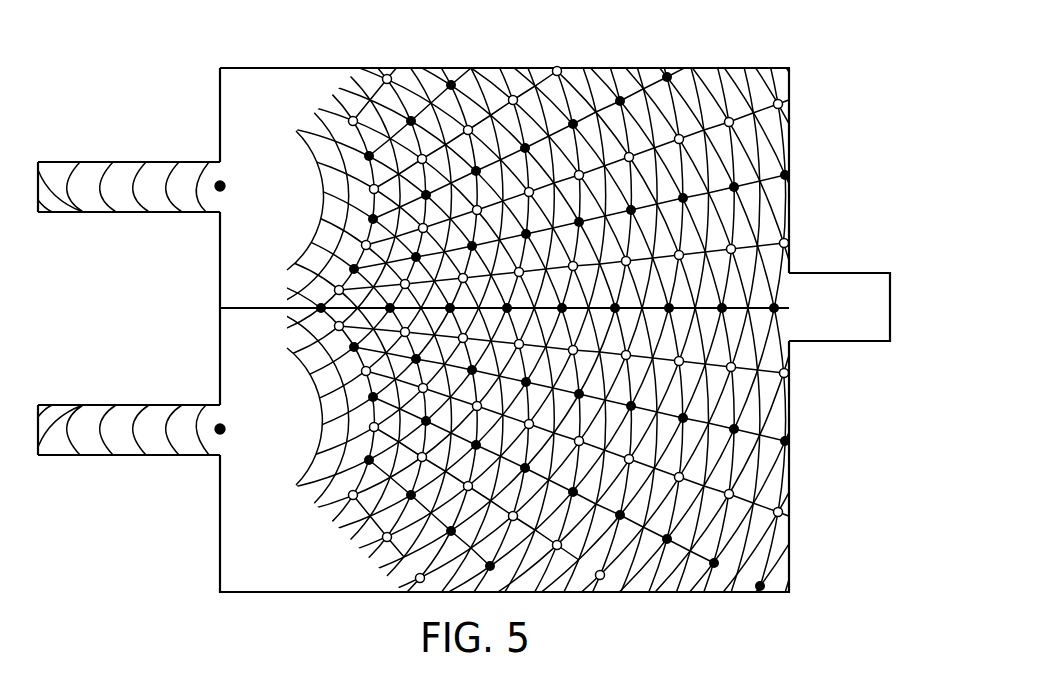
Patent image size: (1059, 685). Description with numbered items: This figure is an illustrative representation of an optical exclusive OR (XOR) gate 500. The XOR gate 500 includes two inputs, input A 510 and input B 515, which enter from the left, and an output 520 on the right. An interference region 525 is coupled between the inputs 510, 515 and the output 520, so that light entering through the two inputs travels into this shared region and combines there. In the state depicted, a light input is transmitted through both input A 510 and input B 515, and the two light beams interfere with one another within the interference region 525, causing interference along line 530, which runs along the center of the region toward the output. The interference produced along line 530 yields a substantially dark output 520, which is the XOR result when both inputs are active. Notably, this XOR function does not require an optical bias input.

The exclusive OR (XOR) gate 500 is at (766, 44).
The input A 510 is at (65, 165).
The input B 515 is at (67, 410).
The output 520 is at (828, 287).
The interference region 525 is at (665, 597).
The line 530 is at (740, 313).